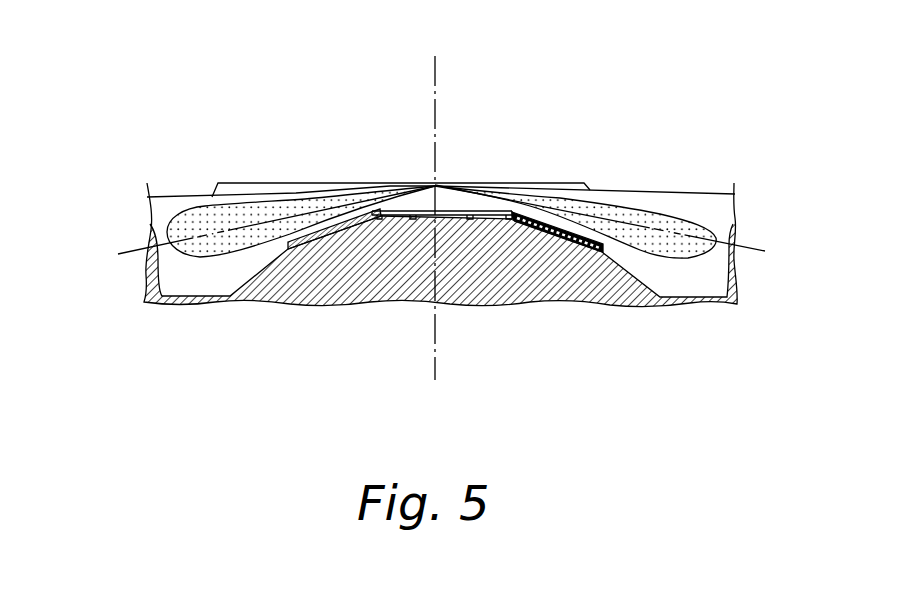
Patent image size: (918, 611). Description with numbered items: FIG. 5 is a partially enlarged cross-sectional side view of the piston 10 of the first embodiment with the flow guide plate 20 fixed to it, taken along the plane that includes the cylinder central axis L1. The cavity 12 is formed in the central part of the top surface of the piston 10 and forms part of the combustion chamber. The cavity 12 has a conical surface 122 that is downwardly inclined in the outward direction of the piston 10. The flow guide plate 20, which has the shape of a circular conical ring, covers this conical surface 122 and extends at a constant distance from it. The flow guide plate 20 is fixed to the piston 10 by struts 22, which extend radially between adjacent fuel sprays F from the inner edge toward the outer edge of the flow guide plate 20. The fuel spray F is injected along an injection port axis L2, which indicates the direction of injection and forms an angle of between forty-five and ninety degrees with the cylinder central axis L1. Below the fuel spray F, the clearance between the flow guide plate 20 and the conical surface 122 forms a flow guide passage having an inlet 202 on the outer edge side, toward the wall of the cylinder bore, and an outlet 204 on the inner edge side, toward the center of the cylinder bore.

The piston 10 is at (173, 153).
The cavity 12 is at (688, 278).
The flow guide plate 20 is at (333, 221).
The inlet 202 is at (290, 253).
The outlet 204 is at (393, 208).
The strut 22 is at (318, 243).
The conical surface 122 is at (600, 253).
The fuel spray F is at (622, 216).
The cylinder central axis L1 is at (436, 201).
The injection port axis L2 is at (446, 230).